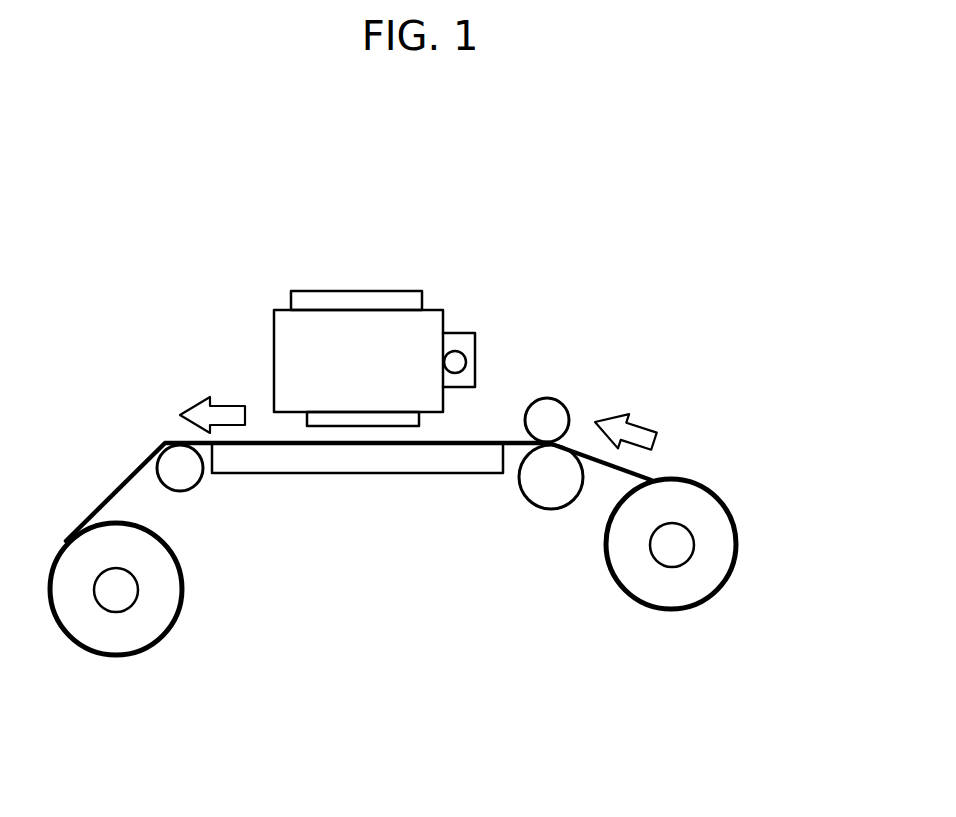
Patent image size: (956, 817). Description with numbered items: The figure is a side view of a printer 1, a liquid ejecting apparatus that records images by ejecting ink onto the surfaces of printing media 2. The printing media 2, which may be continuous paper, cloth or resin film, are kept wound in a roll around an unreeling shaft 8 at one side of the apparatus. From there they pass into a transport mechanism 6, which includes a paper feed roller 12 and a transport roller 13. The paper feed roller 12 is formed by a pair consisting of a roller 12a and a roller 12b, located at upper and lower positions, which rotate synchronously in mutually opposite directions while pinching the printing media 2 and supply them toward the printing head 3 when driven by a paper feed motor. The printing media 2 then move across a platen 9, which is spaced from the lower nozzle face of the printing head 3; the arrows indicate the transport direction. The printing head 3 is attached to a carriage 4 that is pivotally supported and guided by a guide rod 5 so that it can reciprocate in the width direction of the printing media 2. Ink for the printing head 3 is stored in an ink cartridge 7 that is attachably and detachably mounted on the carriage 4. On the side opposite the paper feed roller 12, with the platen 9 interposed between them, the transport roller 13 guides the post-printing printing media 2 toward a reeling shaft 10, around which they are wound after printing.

The printer 1 is at (177, 247).
The printing media 2 is at (653, 465).
The printing head 3 is at (370, 410).
The carriage 4 is at (303, 322).
The guide rod 5 is at (455, 360).
The transport mechanism 6 is at (568, 397).
The ink cartridge 7 is at (343, 305).
The unreeling shaft 8 is at (673, 545).
The platen 9 is at (363, 458).
The reeling shaft 10 is at (120, 590).
The paper feed roller 12 is at (555, 596).
The roller 12a is at (550, 475).
The roller 12b is at (548, 422).
The transport roller 13 is at (180, 468).